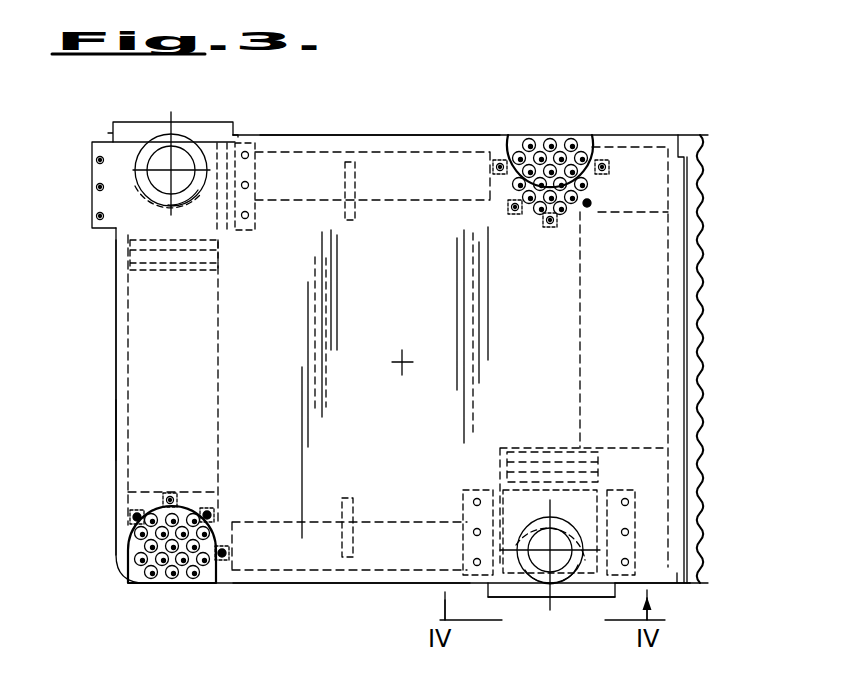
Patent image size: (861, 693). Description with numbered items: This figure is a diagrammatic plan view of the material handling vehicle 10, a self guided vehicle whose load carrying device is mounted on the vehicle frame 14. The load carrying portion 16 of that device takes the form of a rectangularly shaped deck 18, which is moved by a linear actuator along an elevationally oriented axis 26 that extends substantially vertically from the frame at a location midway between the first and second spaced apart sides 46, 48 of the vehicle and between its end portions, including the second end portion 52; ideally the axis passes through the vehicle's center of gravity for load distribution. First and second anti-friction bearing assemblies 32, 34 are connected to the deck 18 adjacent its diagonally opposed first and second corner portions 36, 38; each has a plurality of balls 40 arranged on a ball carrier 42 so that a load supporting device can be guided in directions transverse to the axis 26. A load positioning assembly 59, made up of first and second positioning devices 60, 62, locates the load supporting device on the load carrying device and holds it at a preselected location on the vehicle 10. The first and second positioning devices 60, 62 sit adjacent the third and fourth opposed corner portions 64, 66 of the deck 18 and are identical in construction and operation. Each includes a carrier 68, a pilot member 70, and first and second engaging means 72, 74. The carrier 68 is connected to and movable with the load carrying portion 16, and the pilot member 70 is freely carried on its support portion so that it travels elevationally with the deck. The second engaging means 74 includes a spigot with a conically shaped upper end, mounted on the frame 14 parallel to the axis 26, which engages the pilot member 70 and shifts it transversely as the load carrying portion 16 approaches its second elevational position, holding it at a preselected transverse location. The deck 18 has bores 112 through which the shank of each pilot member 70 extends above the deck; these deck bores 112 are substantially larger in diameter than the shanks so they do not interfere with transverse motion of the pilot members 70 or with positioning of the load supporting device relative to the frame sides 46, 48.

The material handling vehicle 10 is at (272, 587).
The vehicle frame 14 is at (703, 392).
The load carrying portion 16 is at (122, 375).
The deck 18 is at (407, 265).
The elevationally oriented axis 26 is at (402, 372).
The first anti-friction bearing assembly 32 is at (163, 585).
The second anti-friction bearing assembly 34 is at (552, 123).
The first corner portion 36 is at (137, 502).
The second corner portion 38 is at (625, 160).
The balls 40 is at (568, 200).
The ball carrier 42 is at (593, 190).
The first side 46 is at (345, 585).
The second side 48 is at (358, 135).
The second end portion 52 is at (116, 420).
The load positioning assembly 59 is at (667, 597).
The first positioning device 60 is at (557, 603).
The second positioning device 62 is at (250, 130).
The third corner portion 64 is at (660, 527).
The fourth corner portion 66 is at (133, 200).
The carrier 68 is at (92, 228).
The pilot member 70 is at (140, 158).
The first engaging means 72 is at (193, 118).
The second engaging means 74 is at (220, 188).
The deck bores 112 is at (192, 190).